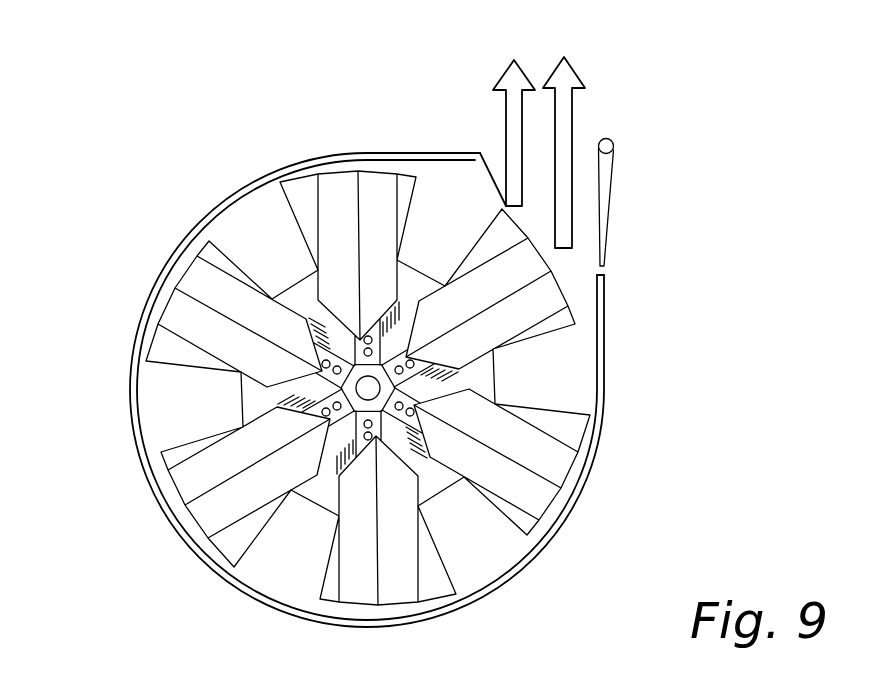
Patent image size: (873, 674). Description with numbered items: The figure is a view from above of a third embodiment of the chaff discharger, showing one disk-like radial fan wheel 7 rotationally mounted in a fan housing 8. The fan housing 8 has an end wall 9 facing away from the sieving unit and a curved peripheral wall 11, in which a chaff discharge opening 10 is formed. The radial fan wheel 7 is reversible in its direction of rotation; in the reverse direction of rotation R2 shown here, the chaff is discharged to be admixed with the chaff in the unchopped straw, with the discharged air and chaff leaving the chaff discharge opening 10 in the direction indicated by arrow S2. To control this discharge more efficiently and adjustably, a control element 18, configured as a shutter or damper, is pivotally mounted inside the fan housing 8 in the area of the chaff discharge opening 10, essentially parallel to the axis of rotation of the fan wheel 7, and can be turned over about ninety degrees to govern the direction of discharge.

The radial fan wheel 7 is at (160, 285).
The fan housing 8 is at (157, 400).
The end wall 9 is at (440, 182).
The chaff discharge opening 10 is at (535, 228).
The curved peripheral wall 11 is at (600, 350).
The control element 18 is at (602, 193).
The air flow S2 is at (507, 137).
The reverse direction of rotation R2 is at (266, 642).